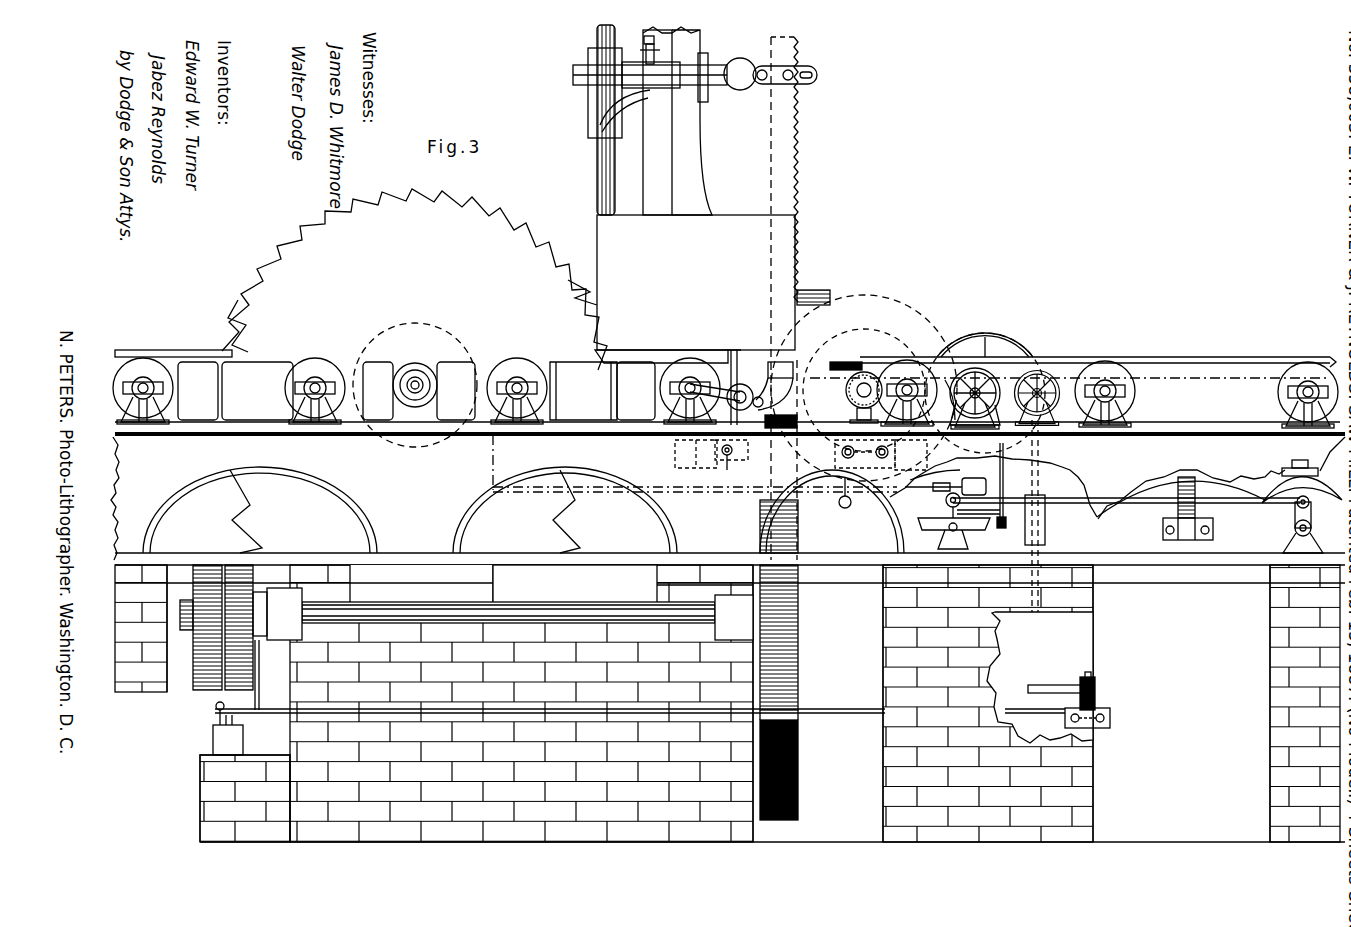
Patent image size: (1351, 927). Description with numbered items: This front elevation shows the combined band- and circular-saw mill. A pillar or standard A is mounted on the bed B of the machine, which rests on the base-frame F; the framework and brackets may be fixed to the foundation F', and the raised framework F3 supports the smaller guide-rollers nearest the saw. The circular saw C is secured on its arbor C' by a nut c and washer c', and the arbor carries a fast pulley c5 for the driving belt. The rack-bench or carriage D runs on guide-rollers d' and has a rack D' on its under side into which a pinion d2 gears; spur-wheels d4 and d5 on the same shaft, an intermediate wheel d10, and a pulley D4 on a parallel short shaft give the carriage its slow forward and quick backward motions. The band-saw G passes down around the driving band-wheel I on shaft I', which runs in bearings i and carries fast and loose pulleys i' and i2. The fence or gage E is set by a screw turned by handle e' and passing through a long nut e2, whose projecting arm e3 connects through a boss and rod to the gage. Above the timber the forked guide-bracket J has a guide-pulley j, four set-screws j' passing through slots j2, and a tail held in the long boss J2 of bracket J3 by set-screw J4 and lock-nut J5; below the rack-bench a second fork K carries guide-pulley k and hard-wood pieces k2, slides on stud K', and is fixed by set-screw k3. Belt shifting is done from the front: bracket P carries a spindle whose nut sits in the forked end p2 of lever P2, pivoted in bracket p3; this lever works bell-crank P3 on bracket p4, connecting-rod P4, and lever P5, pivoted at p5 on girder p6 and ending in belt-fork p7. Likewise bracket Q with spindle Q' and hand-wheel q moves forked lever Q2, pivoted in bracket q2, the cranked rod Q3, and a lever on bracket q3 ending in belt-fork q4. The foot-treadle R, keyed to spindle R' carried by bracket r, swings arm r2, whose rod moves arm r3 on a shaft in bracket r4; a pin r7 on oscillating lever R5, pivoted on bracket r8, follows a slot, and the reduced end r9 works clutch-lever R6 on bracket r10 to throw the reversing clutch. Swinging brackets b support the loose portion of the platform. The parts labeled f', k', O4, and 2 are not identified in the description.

The pillar or standard A is at (677, 121).
The bed B is at (648, 342).
The circular saw C is at (414, 279).
The nut c is at (394, 386).
The washer c' is at (416, 371).
The fast pulley c5 is at (381, 333).
The arbor C' is at (419, 415).
The rack-bench or carriage D is at (1091, 338).
The rack D' is at (1070, 387).
The pulley D4 is at (983, 360).
The guide-rollers d' is at (725, 371).
The pinion d2 is at (853, 397).
The spur-wheel d4 is at (864, 381).
The spur-wheel d5 is at (864, 373).
The intermediate wheel d10 is at (865, 460).
The fence or gage E is at (696, 282).
The handle e' is at (678, 410).
The long nut e2 is at (726, 385).
The projecting arm e3 is at (734, 352).
The base-frame F is at (728, 493).
The foundation F' is at (730, 703).
The framework F3 is at (602, 391).
The bed plate f' is at (235, 391).
The band-saw G is at (784, 298).
The driving band-wheel I is at (784, 692).
The shaft I' is at (575, 585).
The boxes or bearings i is at (503, 614).
The fast pulley i' is at (248, 627).
The loose pulley i2 is at (200, 582).
The forked guide-bracket J is at (770, 74).
The guide-pulley j is at (760, 58).
The set-screws j' is at (802, 58).
The slots j2 is at (817, 75).
The long boss J2 is at (650, 77).
The arm or bracket J3 is at (624, 93).
The set-screw J4 is at (638, 31).
The lock-nut J5 is at (642, 50).
The forked guide-bracket K is at (785, 394).
The guide-pulley k is at (774, 396).
The block k' is at (774, 422).
The hard-wood pieces k2 is at (790, 362).
The set-screw k3 is at (731, 463).
The stud K' is at (696, 463).
The rod O4 is at (684, 511).
The bracket P is at (1043, 398).
The forked end p2 is at (1040, 392).
The lever P2 is at (1047, 586).
The bell-crank lever P3 is at (1061, 685).
The bracket p3 is at (1045, 530).
The long connecting-rod P4 is at (372, 708).
The bracket p4 is at (1100, 719).
The lever P5 is at (215, 707).
The pivot p5 is at (232, 720).
The beam or girder p6 is at (228, 740).
The belt-fork p7 is at (260, 670).
The bracket Q is at (966, 413).
The spindle Q' is at (995, 367).
The forked lever Q2 is at (954, 476).
The cranked rod Q3 is at (962, 480).
The hand-wheel q is at (945, 391).
The bracket q2 is at (919, 450).
The bracket q3 is at (794, 525).
The belt-fork q4 is at (492, 470).
The foot-treadle R is at (945, 528).
The spindle R' is at (1305, 484).
The oscillating lever R5 is at (1126, 493).
The clutch-lever R6 is at (1001, 535).
The bracket r is at (953, 540).
The upright arm r2 is at (945, 504).
The upright arm r3 is at (1297, 516).
The bracket r4 is at (1294, 536).
The pin r7 is at (1300, 456).
The bracket r8 is at (1213, 532).
The reduced end r9 is at (976, 519).
The bracket r10 is at (1014, 483).
The swinging brackets b is at (840, 356).
The rail piece 2 is at (832, 296).